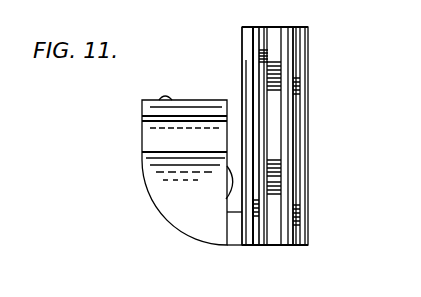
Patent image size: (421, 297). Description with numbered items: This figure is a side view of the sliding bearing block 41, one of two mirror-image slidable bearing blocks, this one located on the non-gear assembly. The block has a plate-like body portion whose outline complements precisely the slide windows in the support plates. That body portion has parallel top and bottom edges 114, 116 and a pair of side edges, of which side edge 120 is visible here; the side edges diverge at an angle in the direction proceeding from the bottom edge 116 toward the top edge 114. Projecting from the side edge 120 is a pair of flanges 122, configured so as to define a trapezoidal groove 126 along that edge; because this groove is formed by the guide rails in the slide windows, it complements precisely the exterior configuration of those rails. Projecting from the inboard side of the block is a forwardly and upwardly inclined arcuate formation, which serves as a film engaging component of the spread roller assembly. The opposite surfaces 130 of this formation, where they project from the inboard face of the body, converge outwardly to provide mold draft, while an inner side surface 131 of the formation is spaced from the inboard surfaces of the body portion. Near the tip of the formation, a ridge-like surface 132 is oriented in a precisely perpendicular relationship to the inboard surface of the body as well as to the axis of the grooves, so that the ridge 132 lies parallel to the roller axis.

The sliding bearing block 41 is at (316, 138).
The top edge 114 is at (275, 27).
The bottom edge 116 is at (270, 246).
The side edge 120 is at (302, 88).
The flanges 122 is at (266, 177).
The trapezoidal groove 126 is at (272, 192).
The opposite surfaces 130 is at (169, 100).
The inner side surface 131 is at (227, 195).
The ridge-like surface 132 is at (144, 100).